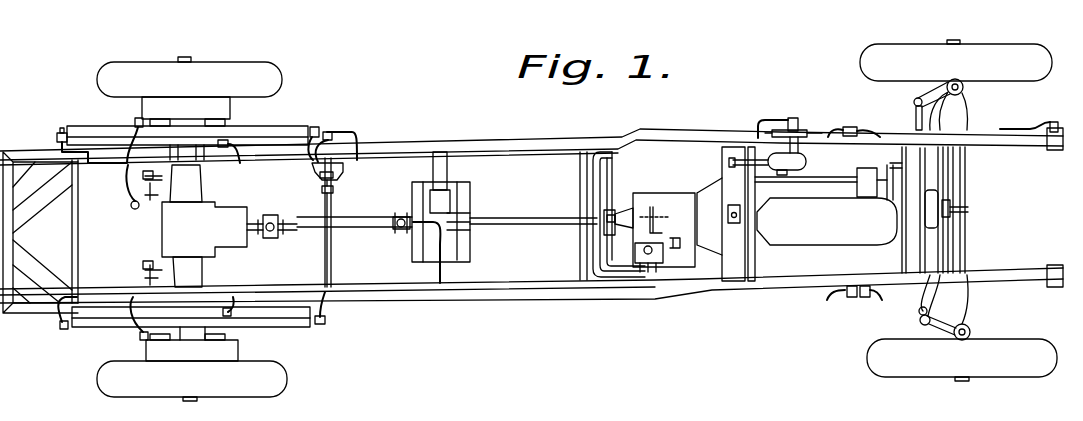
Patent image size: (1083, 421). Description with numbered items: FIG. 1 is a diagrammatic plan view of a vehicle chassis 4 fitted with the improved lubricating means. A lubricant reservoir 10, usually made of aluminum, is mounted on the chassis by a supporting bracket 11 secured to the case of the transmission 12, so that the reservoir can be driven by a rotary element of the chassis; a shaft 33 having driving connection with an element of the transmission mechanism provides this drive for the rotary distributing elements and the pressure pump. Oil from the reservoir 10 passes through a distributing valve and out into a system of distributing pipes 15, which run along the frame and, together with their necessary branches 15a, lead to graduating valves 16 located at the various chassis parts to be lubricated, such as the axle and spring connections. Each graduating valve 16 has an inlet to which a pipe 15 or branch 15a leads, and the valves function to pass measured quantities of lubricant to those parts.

The vehicle chassis frame 4 is at (507, 293).
The reservoir 10 is at (665, 258).
The supporting bracket 11 is at (679, 235).
The transmission 12 is at (664, 222).
The distributing pipes 15 is at (629, 278).
The branches 15a is at (140, 140).
The graduating valves 16 is at (60, 133).
The shaft 33 is at (616, 231).